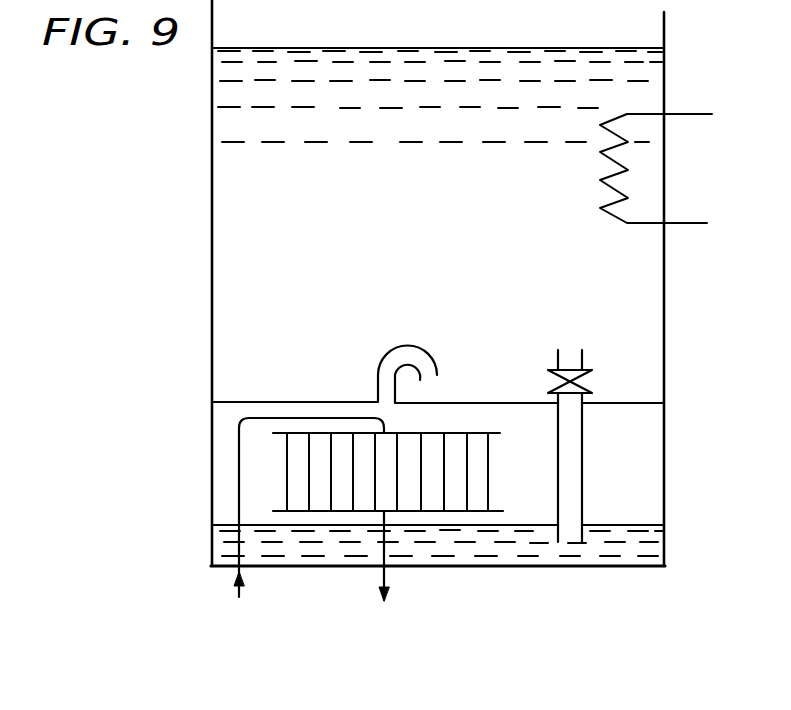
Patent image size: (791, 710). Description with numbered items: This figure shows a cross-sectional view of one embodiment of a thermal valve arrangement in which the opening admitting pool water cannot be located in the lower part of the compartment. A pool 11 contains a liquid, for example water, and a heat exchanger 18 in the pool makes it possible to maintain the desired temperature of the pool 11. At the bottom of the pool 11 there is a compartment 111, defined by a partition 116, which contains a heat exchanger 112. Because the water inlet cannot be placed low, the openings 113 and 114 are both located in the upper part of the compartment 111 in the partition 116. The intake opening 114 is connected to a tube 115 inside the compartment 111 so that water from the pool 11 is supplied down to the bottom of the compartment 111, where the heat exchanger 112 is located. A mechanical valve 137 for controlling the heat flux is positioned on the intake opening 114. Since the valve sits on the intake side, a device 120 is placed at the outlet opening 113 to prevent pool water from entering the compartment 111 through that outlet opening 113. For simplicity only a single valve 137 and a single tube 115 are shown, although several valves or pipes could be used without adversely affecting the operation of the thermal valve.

The pool 11 is at (212, 205).
The heat exchanger 18 is at (625, 223).
The compartment 111 is at (523, 425).
The heat exchanger 112 is at (288, 478).
The outlet opening 113 is at (378, 396).
The intake opening 114 is at (575, 428).
The tube 115 is at (583, 472).
The partition 116 is at (483, 402).
The device 120 is at (405, 352).
The valve 137 is at (592, 368).